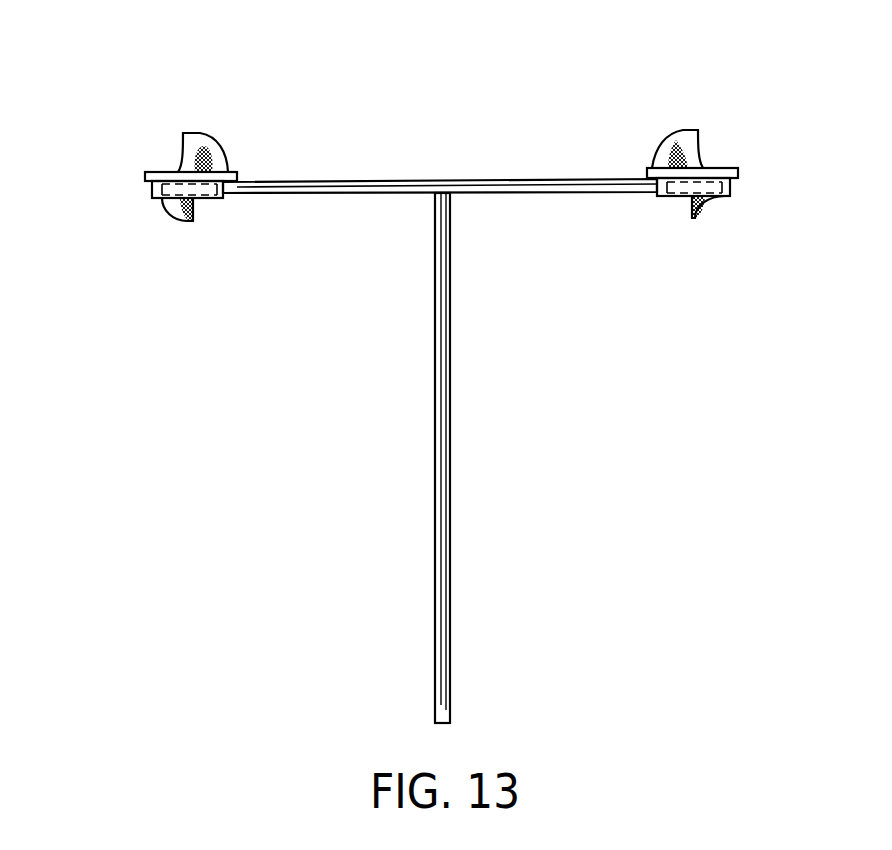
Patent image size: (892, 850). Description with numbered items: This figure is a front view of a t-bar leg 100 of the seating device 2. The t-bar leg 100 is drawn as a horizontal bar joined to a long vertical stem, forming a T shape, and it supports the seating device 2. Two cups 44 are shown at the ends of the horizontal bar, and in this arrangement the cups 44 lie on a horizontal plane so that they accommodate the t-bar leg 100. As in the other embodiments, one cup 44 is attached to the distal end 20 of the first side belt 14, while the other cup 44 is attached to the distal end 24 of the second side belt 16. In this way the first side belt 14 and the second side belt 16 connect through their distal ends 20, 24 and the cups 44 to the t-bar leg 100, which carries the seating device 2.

The seating device 2 is at (305, 96).
The first side belt 14 is at (183, 150).
The second side belt 16 is at (700, 140).
The distal end 20 is at (145, 176).
The distal end 24 is at (738, 174).
The cup 44 is at (207, 202).
The t-bar leg 100 is at (449, 463).